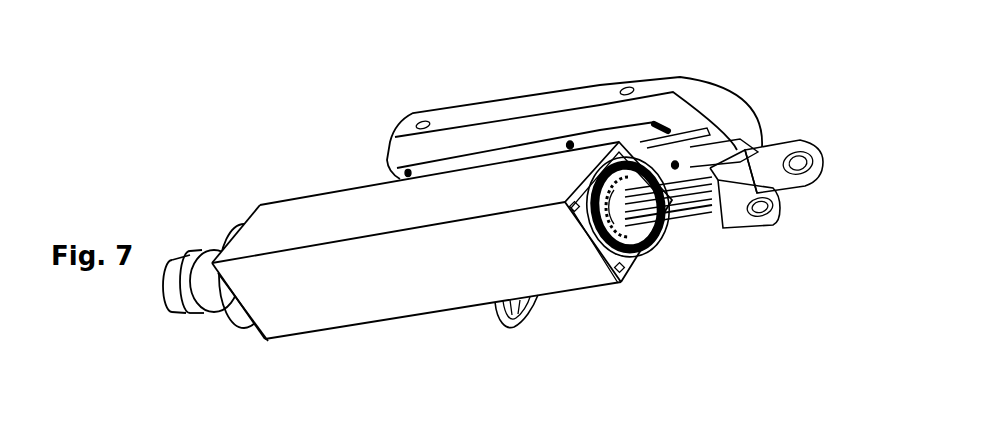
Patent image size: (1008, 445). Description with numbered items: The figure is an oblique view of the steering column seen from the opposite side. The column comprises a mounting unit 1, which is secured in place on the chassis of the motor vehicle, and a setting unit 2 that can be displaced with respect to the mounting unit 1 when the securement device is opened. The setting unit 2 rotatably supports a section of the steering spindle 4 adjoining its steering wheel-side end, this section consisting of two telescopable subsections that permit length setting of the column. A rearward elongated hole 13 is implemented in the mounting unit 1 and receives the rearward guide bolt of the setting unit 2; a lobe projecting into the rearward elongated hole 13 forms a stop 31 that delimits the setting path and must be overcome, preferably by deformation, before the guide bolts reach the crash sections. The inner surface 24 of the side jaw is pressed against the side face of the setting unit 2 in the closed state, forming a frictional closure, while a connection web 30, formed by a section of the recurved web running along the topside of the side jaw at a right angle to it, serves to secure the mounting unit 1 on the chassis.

The mounting unit 1 is at (534, 88).
The setting unit 2 is at (296, 343).
The steering spindle 4 is at (697, 225).
The rearward elongated hole 13 is at (648, 140).
The inner surface 24 is at (690, 158).
The connection web 30 is at (450, 120).
The stop 31 is at (672, 127).